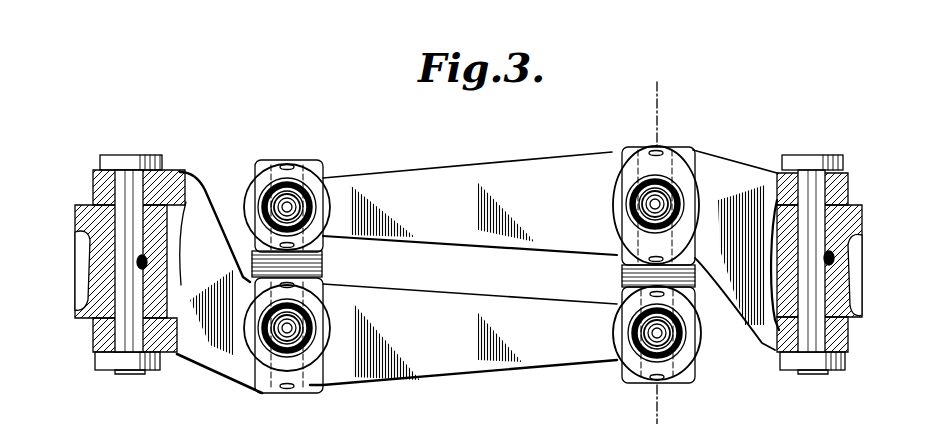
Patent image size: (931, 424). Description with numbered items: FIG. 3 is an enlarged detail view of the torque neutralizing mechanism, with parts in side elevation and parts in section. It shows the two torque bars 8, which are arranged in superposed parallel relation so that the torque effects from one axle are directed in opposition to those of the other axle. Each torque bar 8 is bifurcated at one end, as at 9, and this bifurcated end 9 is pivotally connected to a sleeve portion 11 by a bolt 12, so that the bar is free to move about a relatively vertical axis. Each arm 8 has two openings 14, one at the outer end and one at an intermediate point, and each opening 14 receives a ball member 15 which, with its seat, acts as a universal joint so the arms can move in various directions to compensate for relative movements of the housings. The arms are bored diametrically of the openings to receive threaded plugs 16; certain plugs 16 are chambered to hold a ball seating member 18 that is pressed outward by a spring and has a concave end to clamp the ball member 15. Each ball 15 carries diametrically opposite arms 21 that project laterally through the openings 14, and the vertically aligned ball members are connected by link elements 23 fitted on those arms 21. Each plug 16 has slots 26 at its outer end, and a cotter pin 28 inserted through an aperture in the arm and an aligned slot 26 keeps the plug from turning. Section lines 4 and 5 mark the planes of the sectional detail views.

The section line 4 is at (656, 240).
The section line 5 is at (472, 423).
The torque bar 8 is at (518, 423).
The bifurcated end 9 is at (180, 236).
The sleeve portion 11 is at (162, 262).
The bolt 12 is at (124, 157).
The opening 14 is at (315, 190).
The ball member 15 is at (260, 188).
The threaded plug 16 is at (293, 177).
The ball seating member 18 is at (280, 357).
The arm 21 is at (273, 200).
The link element 23 is at (296, 160).
The slot 26 is at (460, 423).
The cotter pin 28 is at (284, 165).